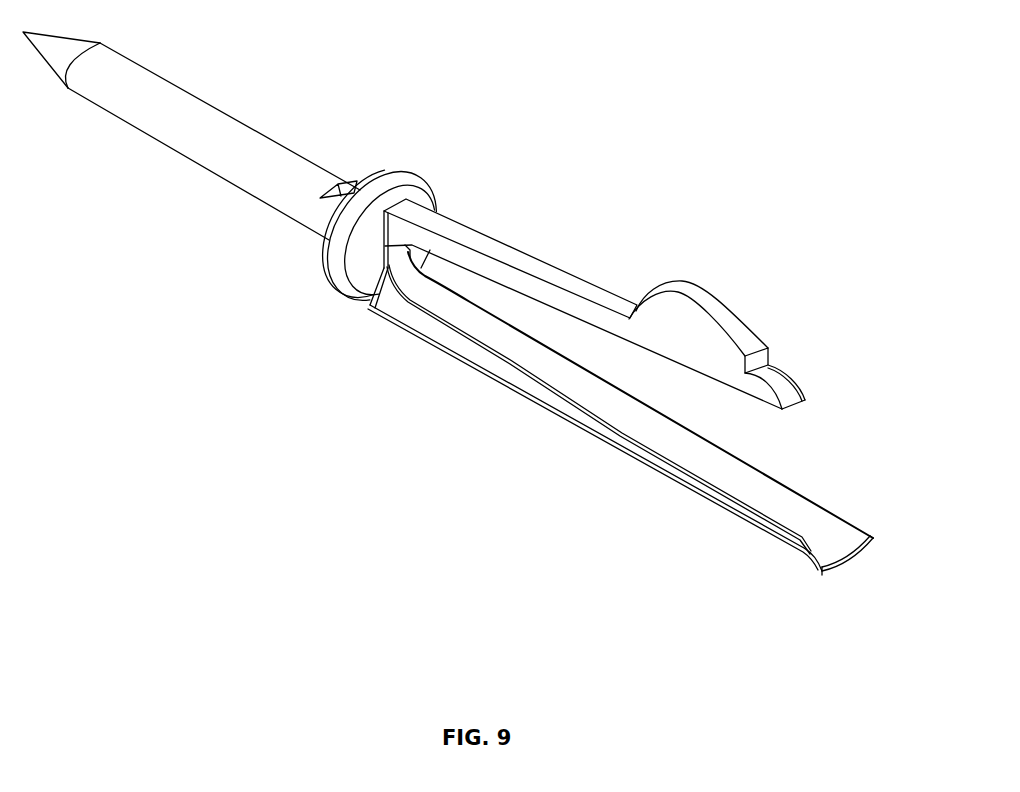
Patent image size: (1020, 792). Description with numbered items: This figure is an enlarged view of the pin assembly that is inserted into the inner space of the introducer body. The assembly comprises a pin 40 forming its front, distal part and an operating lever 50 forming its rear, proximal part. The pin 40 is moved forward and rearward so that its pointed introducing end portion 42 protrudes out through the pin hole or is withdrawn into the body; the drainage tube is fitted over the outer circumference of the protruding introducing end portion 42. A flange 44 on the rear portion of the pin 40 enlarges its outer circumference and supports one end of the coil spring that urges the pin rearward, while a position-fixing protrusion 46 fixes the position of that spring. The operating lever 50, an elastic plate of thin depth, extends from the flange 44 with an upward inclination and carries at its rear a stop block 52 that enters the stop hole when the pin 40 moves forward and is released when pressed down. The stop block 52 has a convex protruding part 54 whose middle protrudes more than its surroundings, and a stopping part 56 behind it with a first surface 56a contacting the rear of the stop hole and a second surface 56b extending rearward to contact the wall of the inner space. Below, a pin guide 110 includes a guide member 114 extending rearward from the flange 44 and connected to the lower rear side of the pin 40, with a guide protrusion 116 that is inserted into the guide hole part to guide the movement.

The pin 40 is at (188, 136).
The introducing end portion 42 is at (81, 91).
The flange 44 is at (395, 176).
The position-fixing protrusion 46 is at (324, 202).
The operating lever 50 is at (660, 304).
The stop block 52 is at (783, 330).
The protruding part 54 is at (745, 276).
The stopping part 56 is at (841, 357).
The first surface 56a is at (768, 352).
The second surface 56b is at (782, 368).
The pin guide 110 is at (620, 444).
The guide member 114 is at (708, 508).
The guide protrusion 116 is at (823, 576).